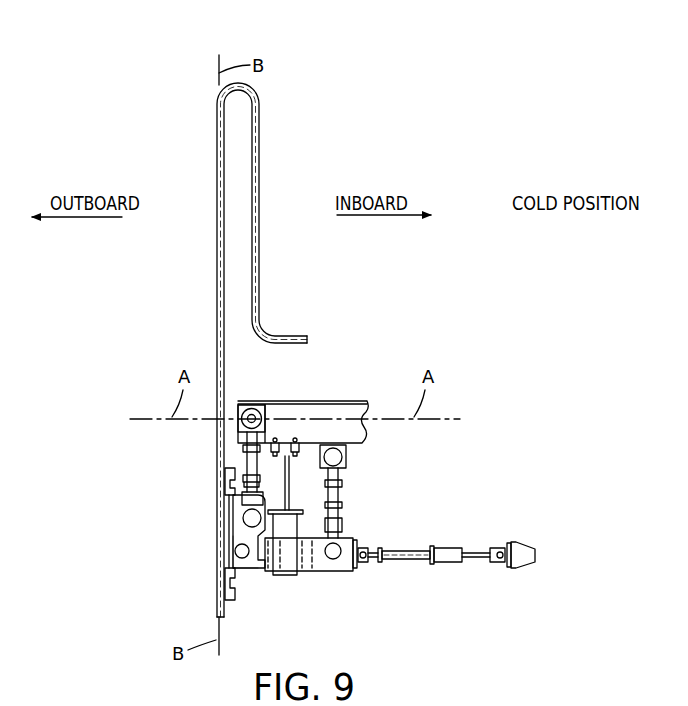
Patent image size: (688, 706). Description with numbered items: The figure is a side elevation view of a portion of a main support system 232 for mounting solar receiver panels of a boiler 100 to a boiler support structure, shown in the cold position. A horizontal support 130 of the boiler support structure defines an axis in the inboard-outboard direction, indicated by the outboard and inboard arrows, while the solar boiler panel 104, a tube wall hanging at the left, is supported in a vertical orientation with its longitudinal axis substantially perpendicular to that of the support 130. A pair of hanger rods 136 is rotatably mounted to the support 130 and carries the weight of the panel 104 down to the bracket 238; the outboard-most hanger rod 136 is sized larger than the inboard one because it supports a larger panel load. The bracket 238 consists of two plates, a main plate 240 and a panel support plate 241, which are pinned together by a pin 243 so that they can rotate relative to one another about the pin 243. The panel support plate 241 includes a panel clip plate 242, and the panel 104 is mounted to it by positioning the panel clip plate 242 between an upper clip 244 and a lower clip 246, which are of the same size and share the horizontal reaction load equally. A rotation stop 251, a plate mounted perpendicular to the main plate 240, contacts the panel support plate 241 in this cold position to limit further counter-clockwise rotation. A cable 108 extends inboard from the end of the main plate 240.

The boiler 100 is at (505, 108).
The solar boiler panel 104 is at (217, 205).
The cable 108 is at (535, 548).
The support 130 is at (333, 410).
The hanger rods 136 is at (243, 452).
The main support system 232 is at (188, 470).
The bracket 238 is at (354, 540).
The main plate 240 is at (325, 565).
The panel support plate 241 is at (225, 545).
The panel clip plate 242 is at (222, 508).
The pin 243 is at (243, 558).
The upper clip 244 is at (225, 478).
The lower clip 246 is at (225, 596).
The rotation stop 251 is at (266, 580).